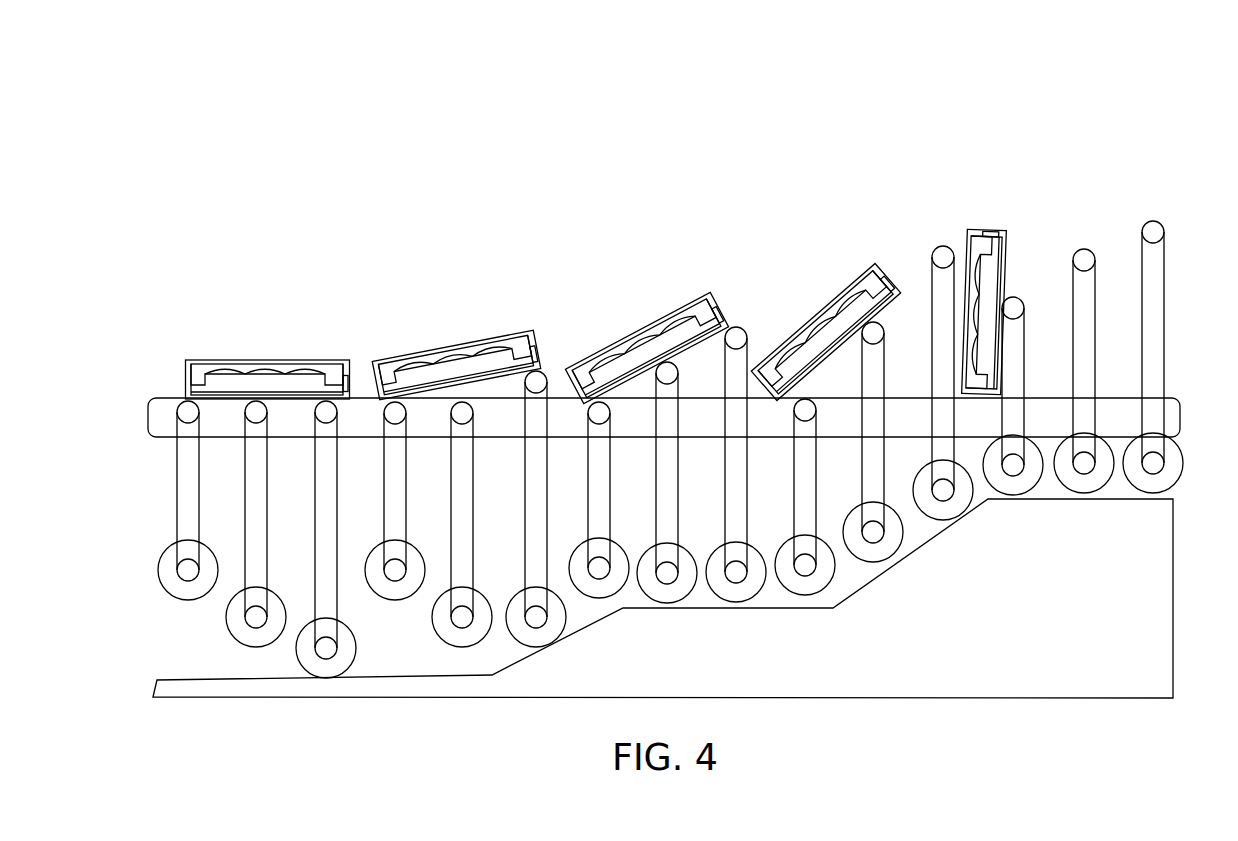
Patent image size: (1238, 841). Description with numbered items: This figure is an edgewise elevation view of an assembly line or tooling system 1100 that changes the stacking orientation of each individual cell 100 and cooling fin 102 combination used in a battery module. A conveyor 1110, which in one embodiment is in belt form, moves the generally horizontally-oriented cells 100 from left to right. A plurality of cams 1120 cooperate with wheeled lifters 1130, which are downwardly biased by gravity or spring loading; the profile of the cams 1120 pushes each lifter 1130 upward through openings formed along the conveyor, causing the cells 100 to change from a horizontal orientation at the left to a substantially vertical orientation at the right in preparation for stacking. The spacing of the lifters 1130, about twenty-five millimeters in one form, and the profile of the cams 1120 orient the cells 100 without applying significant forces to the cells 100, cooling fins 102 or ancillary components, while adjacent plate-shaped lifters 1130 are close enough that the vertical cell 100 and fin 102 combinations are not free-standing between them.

The assembly line system 1100 is at (1167, 148).
The conveyor 1110 is at (152, 415).
The cam 1120 is at (506, 698).
The wheeled lifter 1130 is at (182, 474).
The cell 100 is at (194, 393).
The cooling fin 102 is at (196, 378).